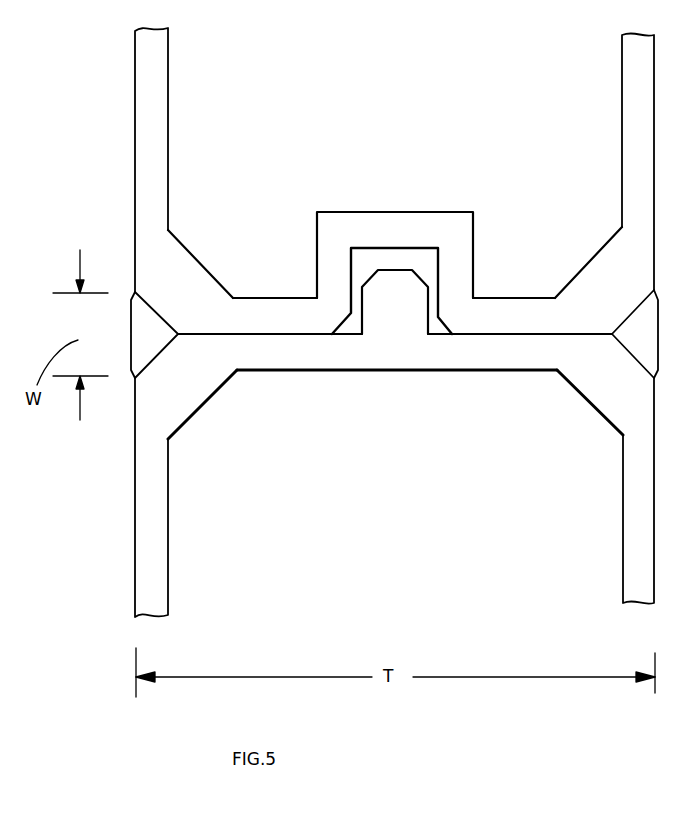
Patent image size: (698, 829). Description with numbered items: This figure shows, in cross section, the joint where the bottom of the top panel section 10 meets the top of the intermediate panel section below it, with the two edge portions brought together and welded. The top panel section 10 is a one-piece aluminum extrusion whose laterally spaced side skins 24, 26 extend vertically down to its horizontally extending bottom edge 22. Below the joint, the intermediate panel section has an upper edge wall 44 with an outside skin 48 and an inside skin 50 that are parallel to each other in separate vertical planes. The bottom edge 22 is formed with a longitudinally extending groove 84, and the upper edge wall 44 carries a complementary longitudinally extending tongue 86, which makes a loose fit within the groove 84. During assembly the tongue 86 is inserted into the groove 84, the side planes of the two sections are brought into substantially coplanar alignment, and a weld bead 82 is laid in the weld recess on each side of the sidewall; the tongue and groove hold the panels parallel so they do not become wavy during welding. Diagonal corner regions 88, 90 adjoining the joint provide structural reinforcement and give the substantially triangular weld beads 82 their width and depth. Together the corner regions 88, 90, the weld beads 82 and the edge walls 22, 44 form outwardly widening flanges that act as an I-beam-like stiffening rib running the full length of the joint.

The top panel section 10 is at (210, 78).
The bottom edge 22 is at (277, 310).
The side skin 24 is at (160, 140).
The side skin 26 is at (632, 88).
The upper edge wall 44 is at (480, 358).
The outside skin 48 is at (160, 552).
The inside skin 50 is at (627, 522).
The weld bead 82 is at (145, 315).
The groove 84 is at (375, 258).
The tongue 86 is at (412, 300).
The diagonal corner region 88 is at (197, 288).
The diagonal corner region 90 is at (197, 390).